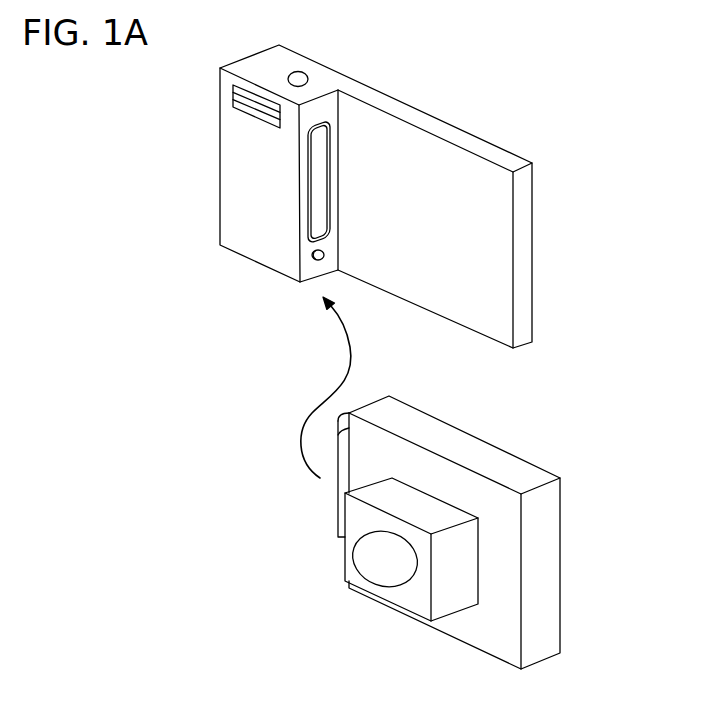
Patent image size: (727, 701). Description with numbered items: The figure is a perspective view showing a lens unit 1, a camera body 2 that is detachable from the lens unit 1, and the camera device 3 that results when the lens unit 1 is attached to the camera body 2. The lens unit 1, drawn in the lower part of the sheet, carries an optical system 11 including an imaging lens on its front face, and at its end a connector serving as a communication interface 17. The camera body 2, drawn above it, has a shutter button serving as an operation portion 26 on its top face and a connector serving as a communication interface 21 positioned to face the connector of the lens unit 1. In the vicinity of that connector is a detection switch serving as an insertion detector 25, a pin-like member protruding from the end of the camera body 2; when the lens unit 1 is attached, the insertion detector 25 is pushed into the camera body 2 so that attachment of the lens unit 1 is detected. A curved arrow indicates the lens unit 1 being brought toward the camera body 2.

The lens unit 1 is at (540, 467).
The camera body 2 is at (507, 150).
The camera device 3 is at (615, 360).
The optical system 11 is at (402, 590).
The communication interface 17 is at (340, 517).
The communication interface 21 is at (333, 137).
The insertion detector 25 is at (325, 265).
The operation portion 26 is at (303, 73).